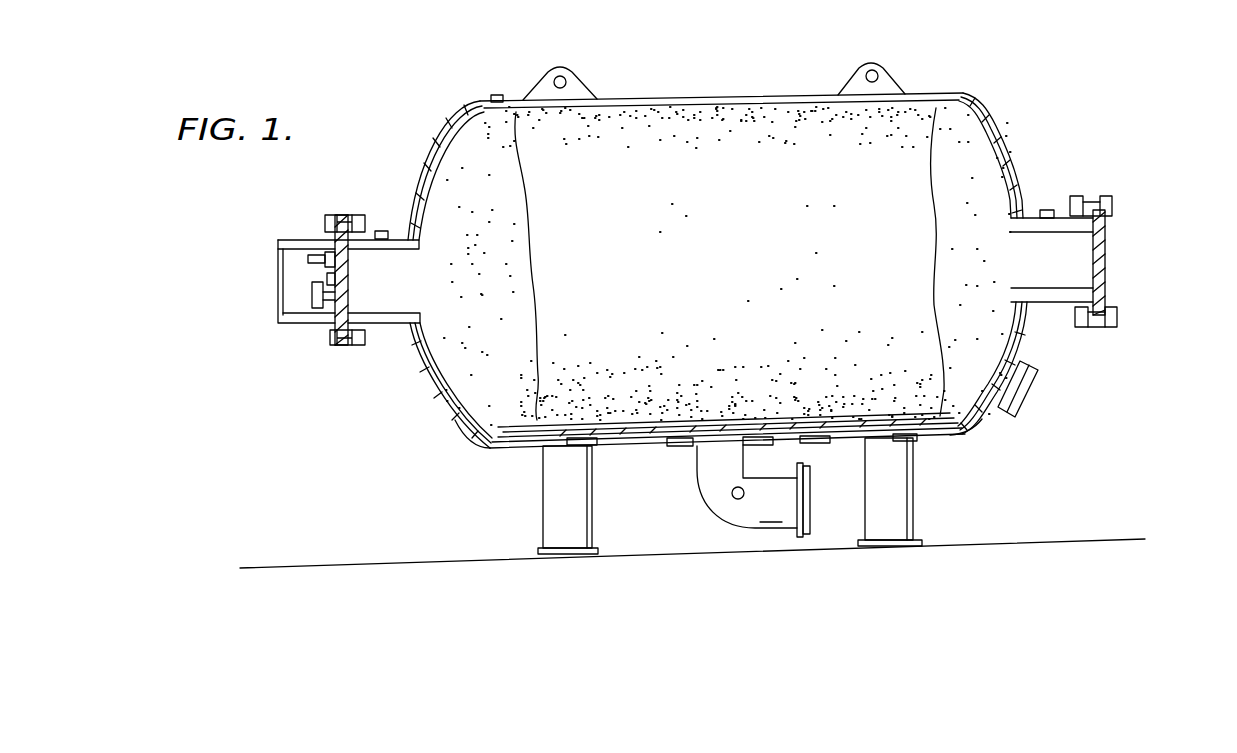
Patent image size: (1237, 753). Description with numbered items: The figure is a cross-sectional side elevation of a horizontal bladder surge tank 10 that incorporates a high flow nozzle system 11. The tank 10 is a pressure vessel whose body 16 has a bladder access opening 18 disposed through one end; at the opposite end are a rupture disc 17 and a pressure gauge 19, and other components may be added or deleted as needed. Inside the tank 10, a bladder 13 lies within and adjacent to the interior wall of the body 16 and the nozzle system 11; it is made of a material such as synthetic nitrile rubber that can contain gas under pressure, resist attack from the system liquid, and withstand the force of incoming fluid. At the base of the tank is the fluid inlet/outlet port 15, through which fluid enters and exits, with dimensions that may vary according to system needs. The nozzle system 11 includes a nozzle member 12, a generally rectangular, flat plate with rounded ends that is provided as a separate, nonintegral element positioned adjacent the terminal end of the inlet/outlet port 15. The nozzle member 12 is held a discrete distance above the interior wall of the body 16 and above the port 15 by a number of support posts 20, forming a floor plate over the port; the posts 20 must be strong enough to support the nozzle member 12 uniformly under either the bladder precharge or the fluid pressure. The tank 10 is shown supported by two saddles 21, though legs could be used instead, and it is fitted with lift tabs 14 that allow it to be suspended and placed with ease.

The horizontal bladder surge tank 10 is at (693, 84).
The high flow nozzle system 11 is at (763, 410).
The nozzle member 12 is at (477, 458).
The bladder 13 is at (450, 365).
The lift tabs 14 is at (883, 83).
The fluid inlet/outlet port 15 is at (707, 490).
The body 16 is at (1007, 148).
The rupture disc 17 is at (277, 268).
The bladder access opening 18 is at (1113, 257).
The pressure gauge 19 is at (317, 302).
The support posts 20 is at (623, 443).
The saddles 21 is at (295, 233).